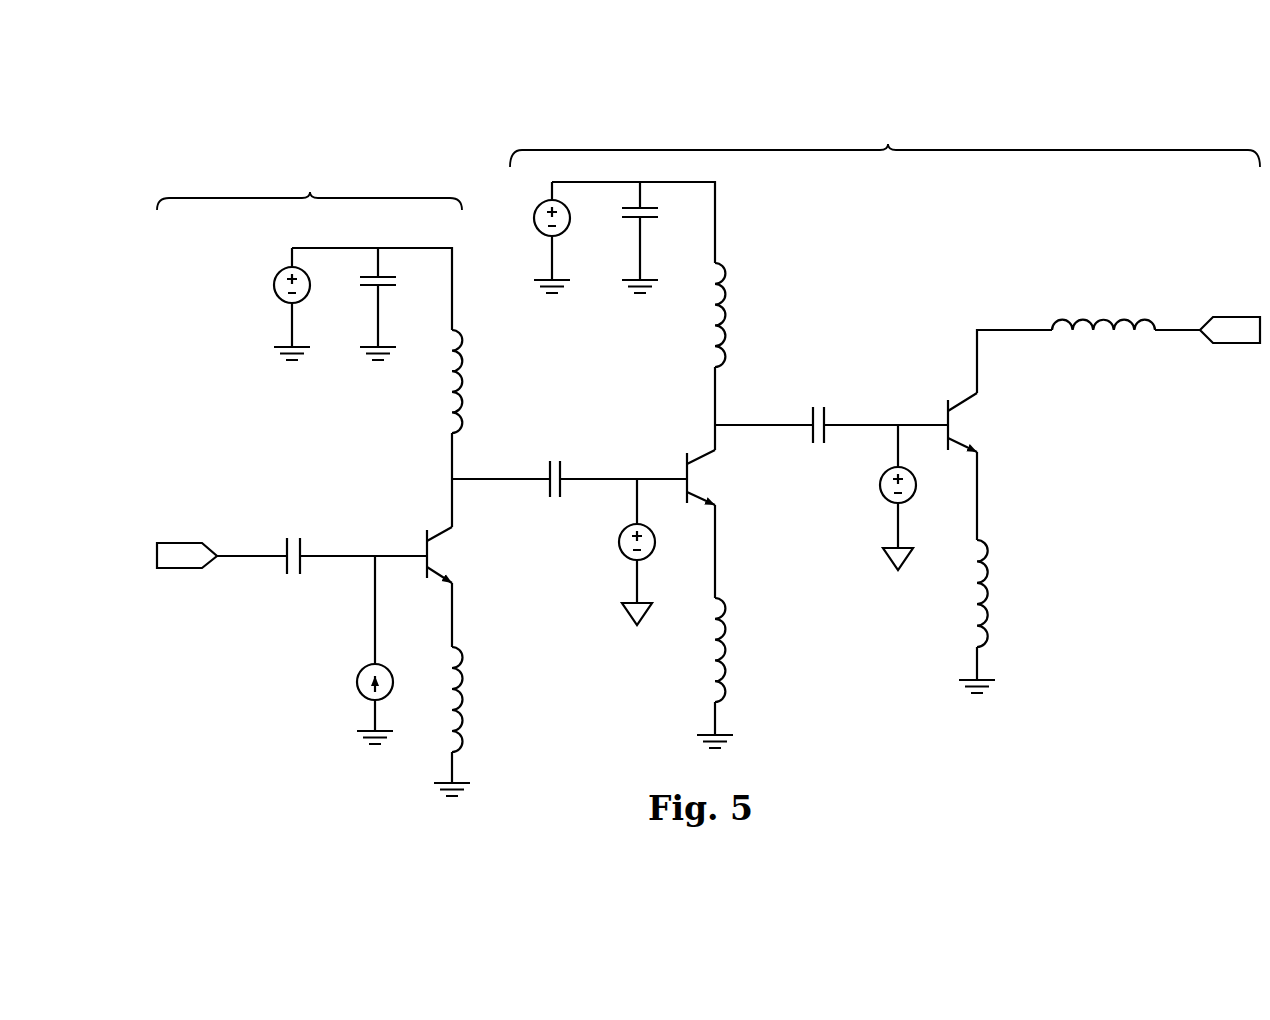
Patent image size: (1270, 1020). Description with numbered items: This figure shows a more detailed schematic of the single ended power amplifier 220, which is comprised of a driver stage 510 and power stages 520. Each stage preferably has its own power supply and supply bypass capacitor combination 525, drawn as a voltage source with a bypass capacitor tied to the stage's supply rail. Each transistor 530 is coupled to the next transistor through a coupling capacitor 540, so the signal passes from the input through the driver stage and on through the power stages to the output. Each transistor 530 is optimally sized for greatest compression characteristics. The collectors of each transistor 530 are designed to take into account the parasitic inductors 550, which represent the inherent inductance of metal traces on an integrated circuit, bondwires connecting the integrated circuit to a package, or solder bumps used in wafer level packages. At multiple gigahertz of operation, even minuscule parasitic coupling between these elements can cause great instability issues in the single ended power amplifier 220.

The single ended power amplifier 220 is at (225, 122).
The driver stage 510 is at (309, 184).
The power stages 520 is at (885, 140).
The power supply and supply bypass capacitor combination 525 is at (273, 370).
The transistor 530 is at (408, 513).
The coupling capacitor 540 is at (277, 535).
The parasitic inductor 550 is at (470, 380).